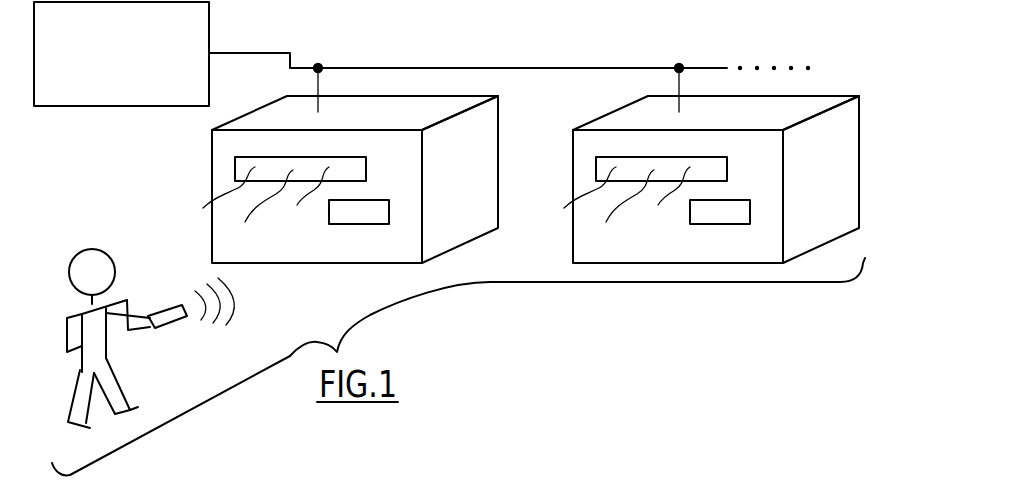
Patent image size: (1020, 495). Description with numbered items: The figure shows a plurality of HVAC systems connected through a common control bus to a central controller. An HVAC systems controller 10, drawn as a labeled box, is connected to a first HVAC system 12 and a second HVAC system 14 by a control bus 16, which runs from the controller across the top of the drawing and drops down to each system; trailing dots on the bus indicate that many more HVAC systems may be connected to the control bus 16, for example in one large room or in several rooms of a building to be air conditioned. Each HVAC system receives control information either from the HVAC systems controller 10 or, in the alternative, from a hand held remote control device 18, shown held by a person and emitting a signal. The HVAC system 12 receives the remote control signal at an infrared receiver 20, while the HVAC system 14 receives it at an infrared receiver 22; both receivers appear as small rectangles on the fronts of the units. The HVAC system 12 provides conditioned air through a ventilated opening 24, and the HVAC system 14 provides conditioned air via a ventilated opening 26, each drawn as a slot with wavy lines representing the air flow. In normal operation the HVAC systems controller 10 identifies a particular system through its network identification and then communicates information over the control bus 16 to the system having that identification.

The HVAC systems controller 10 is at (211, 24).
The HVAC system 12 is at (352, 179).
The HVAC system 14 is at (711, 179).
The control bus 16 is at (490, 66).
The hand held remote control device 18 is at (172, 326).
The infrared receiver 20 is at (348, 218).
The infrared receiver 22 is at (709, 218).
The ventilated opening 24 is at (240, 167).
The ventilated opening 26 is at (601, 167).